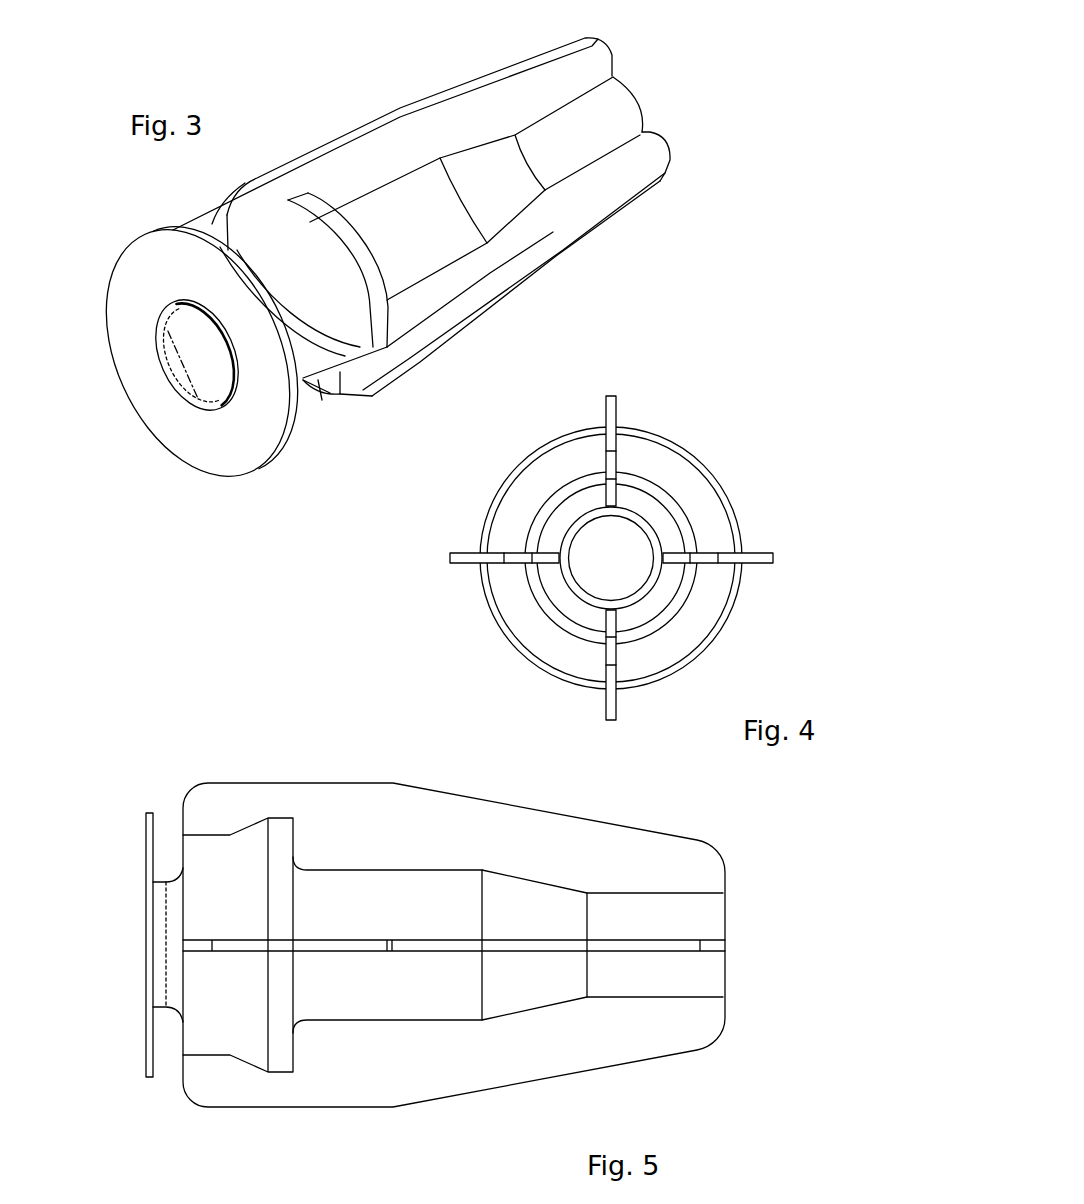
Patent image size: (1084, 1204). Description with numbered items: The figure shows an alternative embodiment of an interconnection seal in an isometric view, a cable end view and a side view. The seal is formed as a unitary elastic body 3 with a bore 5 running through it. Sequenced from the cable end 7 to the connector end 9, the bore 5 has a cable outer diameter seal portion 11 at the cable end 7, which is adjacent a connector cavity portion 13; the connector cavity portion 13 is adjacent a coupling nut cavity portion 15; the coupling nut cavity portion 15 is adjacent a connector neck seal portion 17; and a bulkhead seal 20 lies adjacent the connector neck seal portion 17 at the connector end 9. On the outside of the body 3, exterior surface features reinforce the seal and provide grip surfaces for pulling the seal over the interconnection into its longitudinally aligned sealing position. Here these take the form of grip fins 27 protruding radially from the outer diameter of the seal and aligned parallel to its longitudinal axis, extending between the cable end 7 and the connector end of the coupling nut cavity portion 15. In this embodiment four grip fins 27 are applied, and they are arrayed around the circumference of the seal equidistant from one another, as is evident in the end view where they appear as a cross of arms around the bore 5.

In FIG. 3, the unitary elastic body 3 is at (425, 230).
In FIG. 4, the unitary elastic body 3 is at (513, 522).
In FIG. 5, the unitary elastic body 3 is at (642, 982).
In FIG. 3, the bore 5 is at (207, 355).
In FIG. 4, the bore 5 is at (607, 575).
In FIG. 5, the cable end 7 is at (738, 952).
In FIG. 3, the connector end 9 is at (138, 437).
In FIG. 5, the connector end 9 is at (129, 935).
In FIG. 3, the cable outer diameter seal portion 11 is at (590, 113).
In FIG. 4, the cable outer diameter seal portion 11 is at (570, 580).
In FIG. 5, the cable outer diameter seal portion 11 is at (690, 980).
In FIG. 3, the connector cavity portion 13 is at (478, 182).
In FIG. 4, the connector cavity portion 13 is at (572, 508).
In FIG. 5, the connector cavity portion 13 is at (403, 902).
In FIG. 3, the coupling nut cavity portion 15 is at (298, 237).
In FIG. 4, the coupling nut cavity portion 15 is at (708, 603).
In FIG. 5, the coupling nut cavity portion 15 is at (227, 858).
In FIG. 3, the connector neck seal portion 17 is at (202, 393).
In FIG. 5, the connector neck seal portion 17 is at (166, 880).
In FIG. 3, the bulkhead seal 20 is at (243, 440).
In FIG. 4, the bulkhead seal 20 is at (705, 462).
In FIG. 5, the bulkhead seal 20 is at (145, 853).
In FIG. 3, the grip fins 27 is at (510, 98).
In FIG. 4, the grip fins 27 is at (612, 415).
In FIG. 5, the grip fins 27 is at (680, 862).